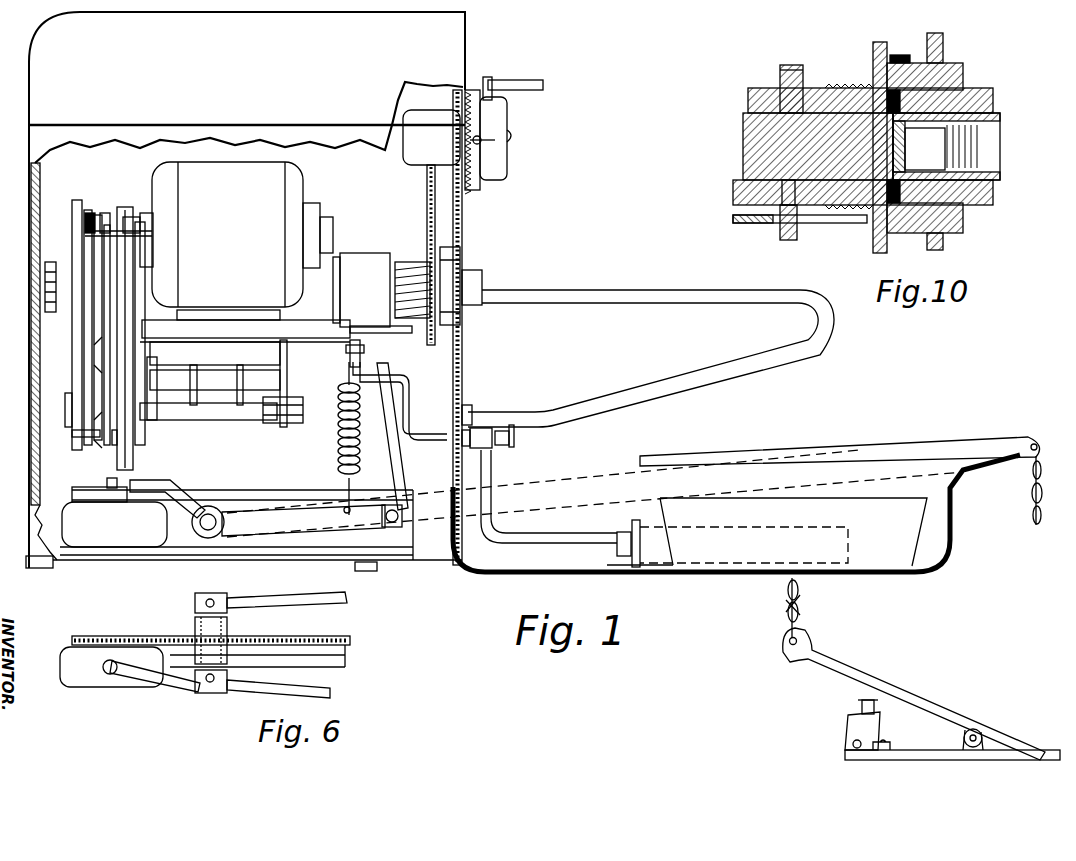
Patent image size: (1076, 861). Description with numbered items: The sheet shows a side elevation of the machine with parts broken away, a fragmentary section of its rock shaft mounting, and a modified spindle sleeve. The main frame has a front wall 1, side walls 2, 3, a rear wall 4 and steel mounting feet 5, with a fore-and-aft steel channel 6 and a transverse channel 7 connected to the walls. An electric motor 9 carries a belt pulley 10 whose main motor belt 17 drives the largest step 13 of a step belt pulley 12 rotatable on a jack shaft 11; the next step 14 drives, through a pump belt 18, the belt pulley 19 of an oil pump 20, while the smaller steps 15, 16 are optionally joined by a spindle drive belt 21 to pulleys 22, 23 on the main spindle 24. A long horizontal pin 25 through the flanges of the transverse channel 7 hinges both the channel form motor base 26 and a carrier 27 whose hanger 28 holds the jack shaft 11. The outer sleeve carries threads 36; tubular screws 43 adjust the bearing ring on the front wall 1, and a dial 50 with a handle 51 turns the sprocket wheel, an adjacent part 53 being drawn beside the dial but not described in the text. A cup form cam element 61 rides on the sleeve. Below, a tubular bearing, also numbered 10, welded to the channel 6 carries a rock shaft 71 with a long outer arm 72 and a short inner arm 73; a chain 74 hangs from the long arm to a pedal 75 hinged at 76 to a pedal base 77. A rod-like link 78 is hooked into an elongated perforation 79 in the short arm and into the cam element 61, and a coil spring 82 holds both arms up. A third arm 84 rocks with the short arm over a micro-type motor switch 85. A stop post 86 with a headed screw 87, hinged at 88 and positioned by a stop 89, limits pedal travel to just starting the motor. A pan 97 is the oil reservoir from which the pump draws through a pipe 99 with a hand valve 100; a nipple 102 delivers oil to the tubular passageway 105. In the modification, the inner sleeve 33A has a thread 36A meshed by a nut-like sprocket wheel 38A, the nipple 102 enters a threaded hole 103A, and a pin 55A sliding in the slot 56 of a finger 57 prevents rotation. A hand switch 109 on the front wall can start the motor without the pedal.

In FIG. 1, the front wall 1 is at (462, 223).
In FIG. 1, the side wall 2 is at (35, 140).
In FIG. 1, the side wall 3 is at (50, 188).
In FIG. 6, the side wall 3 is at (320, 638).
In FIG. 1, the rear wall 4 is at (37, 225).
In FIG. 1, the mounting feet 5 is at (35, 563).
In FIG. 1, the steel channel 6 is at (300, 492).
In FIG. 6, the steel channel 6 is at (346, 655).
In FIG. 1, the transverse channel 7 is at (287, 334).
In FIG. 1, the electric motor 9 is at (242, 241).
In FIG. 1, the belt pulley 10 is at (112, 216).
In FIG. 6, the belt pulley 10 is at (226, 622).
In FIG. 1, the jack shaft 11 is at (205, 411).
In FIG. 1, the step belt pulley 12 is at (133, 437).
In FIG. 1, the pulley step 13 is at (134, 456).
In FIG. 1, the pulley step 14 is at (96, 448).
In FIG. 1, the pulley step 15 is at (88, 441).
In FIG. 1, the pulley step 16 is at (68, 420).
In FIG. 1, the main motor belt 17 is at (132, 217).
In FIG. 1, the pump belt 18 is at (105, 446).
In FIG. 1, the belt pulley 19 is at (37, 103).
In FIG. 1, the oil pump 20 is at (215, 371).
In FIG. 1, the spindle drive belt 21 is at (78, 378).
In FIG. 1, the pulley 22 is at (95, 212).
In FIG. 1, the pulley 23 is at (74, 224).
In FIG. 1, the main spindle 24 is at (62, 310).
In FIG. 1, the horizontal pin 25 is at (362, 353).
In FIG. 1, the motor base 26 is at (230, 320).
In FIG. 1, the carrier 27 is at (270, 383).
In FIG. 1, the hanger 28 is at (205, 370).
In FIG. 10, the inner sleeve 33A is at (826, 96).
In FIG. 1, the threads 36 is at (415, 262).
In FIG. 10, the thread 36A is at (848, 97).
In FIG. 10, the sprocket wheel 38A is at (886, 61).
In FIG. 1, the tubular screws 43 is at (427, 197).
In FIG. 1, the dial 50 is at (498, 162).
In FIG. 1, the handle 51 is at (515, 80).
In FIG. 1, the rack 53 is at (480, 186).
In FIG. 10, the pin 55A is at (785, 233).
In FIG. 10, the slot 56 is at (826, 222).
In FIG. 10, the finger 57 is at (735, 220).
In FIG. 1, the cam element 61 is at (365, 265).
In FIG. 1, the rock shaft 71 is at (225, 522).
In FIG. 6, the rock shaft 71 is at (211, 598).
In FIG. 1, the long outer arm 72 is at (975, 444).
In FIG. 6, the long outer arm 72 is at (297, 598).
In FIG. 1, the short inner arm 73 is at (355, 528).
In FIG. 6, the short inner arm 73 is at (332, 690).
In FIG. 1, the chain 74 is at (1030, 520).
In FIG. 1, the pedal 75 is at (846, 673).
In FIG. 1, the hinge 76 is at (976, 730).
In FIG. 1, the pedal base 77 is at (948, 741).
In FIG. 1, the link 78 is at (405, 462).
In FIG. 1, the perforation 79 is at (392, 518).
In FIG. 1, the coil spring 82 is at (338, 447).
In FIG. 1, the third arm 84 is at (160, 484).
In FIG. 6, the third arm 84 is at (175, 685).
In FIG. 1, the motor switch 85 is at (114, 524).
In FIG. 6, the motor switch 85 is at (100, 684).
In FIG. 1, the stop post 86 is at (850, 724).
In FIG. 1, the headed screw 87 is at (860, 704).
In FIG. 1, the hinge 88 is at (432, 335).
In FIG. 1, the stop 89 is at (896, 742).
In FIG. 1, the pan 97 is at (572, 572).
In FIG. 1, the pipe 99 is at (412, 408).
In FIG. 1, the hand valve 100 is at (511, 436).
In FIG. 10, the nipple 102 is at (788, 78).
In FIG. 10, the threaded hole 103A is at (748, 102).
In FIG. 10, the tubular passageway 105 is at (745, 140).
In FIG. 1, the hand switch 109 is at (481, 140).